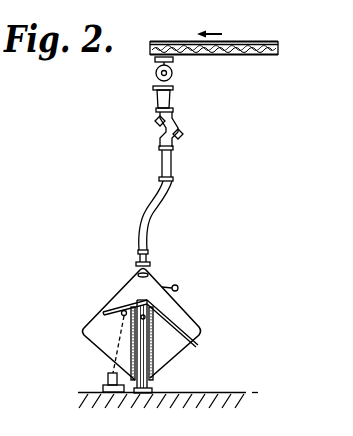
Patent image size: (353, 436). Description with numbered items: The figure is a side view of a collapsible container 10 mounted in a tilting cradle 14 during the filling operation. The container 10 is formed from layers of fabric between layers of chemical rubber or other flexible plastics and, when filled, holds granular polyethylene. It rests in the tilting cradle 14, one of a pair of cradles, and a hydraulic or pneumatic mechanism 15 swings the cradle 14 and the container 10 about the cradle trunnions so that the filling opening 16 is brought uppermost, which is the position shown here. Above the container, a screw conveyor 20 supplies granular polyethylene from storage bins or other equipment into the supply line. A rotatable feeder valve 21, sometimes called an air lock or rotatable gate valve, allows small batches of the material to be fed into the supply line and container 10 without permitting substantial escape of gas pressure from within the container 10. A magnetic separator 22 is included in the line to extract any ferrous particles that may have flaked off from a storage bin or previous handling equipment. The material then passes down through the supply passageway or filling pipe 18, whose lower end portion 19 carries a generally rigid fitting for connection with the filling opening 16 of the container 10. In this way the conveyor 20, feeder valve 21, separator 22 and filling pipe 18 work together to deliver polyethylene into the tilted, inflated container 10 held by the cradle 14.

The collapsible container 10 is at (184, 315).
The tilting cradle 14 is at (176, 358).
The hydraulic or pneumatic mechanism 15 is at (106, 367).
The filling opening 16 is at (133, 268).
The filling pipe 18 is at (161, 208).
The lower end portion 19 is at (149, 262).
The screw conveyor 20 is at (224, 56).
The rotatable feeder valve 21 is at (158, 75).
The magnetic separator 22 is at (175, 130).